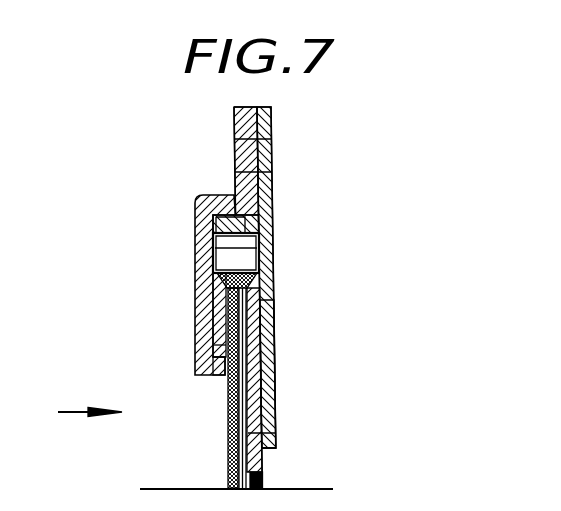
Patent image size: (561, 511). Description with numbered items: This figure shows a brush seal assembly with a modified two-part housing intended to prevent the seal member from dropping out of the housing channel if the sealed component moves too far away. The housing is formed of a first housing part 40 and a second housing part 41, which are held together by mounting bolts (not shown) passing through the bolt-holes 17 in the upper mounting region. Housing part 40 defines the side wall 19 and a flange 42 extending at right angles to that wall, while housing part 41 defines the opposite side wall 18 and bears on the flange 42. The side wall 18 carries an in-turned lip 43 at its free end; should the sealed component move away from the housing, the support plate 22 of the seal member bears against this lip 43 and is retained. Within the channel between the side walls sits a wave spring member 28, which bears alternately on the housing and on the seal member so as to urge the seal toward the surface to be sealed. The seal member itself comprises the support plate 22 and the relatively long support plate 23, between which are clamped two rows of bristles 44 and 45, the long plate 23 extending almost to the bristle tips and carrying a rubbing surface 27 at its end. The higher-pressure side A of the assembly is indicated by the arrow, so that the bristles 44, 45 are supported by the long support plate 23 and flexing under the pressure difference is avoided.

The bolt-holes 17 is at (258, 147).
The housing part 41 is at (196, 211).
The flange 42 is at (232, 224).
The wave spring member 28 is at (200, 253).
The housing part 40 is at (273, 260).
The side wall 18 is at (202, 280).
The support plate 22 is at (202, 310).
The in-turned lip 43 is at (221, 366).
The row of bristles 44 is at (230, 428).
The row of bristles 45 is at (262, 430).
The support plate 23 is at (262, 343).
The side wall 19 is at (277, 378).
The rubbing surface 27 is at (268, 478).
The side A is at (78, 413).